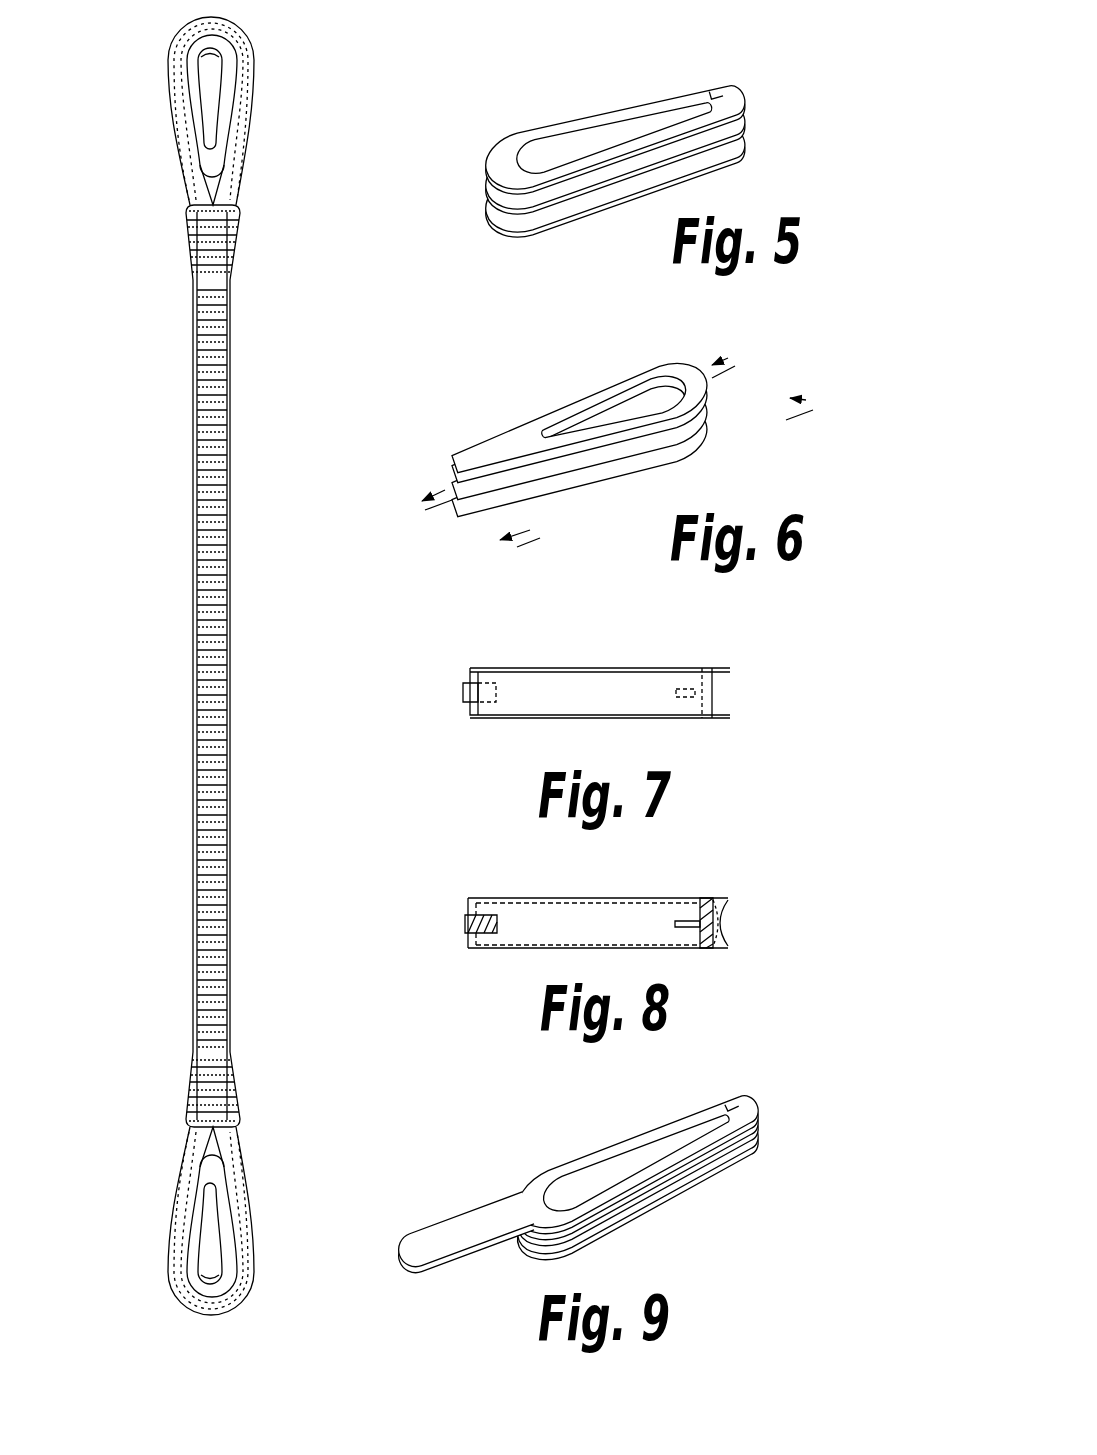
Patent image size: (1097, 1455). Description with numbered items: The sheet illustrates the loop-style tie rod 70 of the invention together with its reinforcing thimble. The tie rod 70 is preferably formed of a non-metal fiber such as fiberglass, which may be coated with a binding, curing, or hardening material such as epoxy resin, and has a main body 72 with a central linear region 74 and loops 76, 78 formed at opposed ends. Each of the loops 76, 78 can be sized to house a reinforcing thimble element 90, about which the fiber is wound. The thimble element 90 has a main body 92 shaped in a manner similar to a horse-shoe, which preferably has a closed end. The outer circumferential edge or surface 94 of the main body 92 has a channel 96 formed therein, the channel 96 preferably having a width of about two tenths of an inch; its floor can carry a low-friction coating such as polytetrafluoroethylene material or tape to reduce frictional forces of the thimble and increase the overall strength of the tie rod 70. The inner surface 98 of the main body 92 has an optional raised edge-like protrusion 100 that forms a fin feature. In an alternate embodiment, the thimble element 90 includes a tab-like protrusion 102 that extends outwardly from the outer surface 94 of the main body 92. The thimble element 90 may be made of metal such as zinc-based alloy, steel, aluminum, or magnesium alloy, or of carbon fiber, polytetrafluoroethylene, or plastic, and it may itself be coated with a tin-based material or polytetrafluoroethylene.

In FIG. 4, the tie rod 70 is at (138, 213).
In FIG. 4, the main body 72 is at (252, 487).
In FIG. 4, the central linear region 74 is at (231, 762).
In FIG. 4, the loop 76 is at (250, 127).
In FIG. 4, the loop 78 is at (177, 1246).
In FIG. 4, the thimble element 90 is at (229, 53).
In FIG. 5, the thimble element 90 is at (614, 143).
In FIG. 6, the thimble element 90 is at (608, 427).
In FIG. 7, the thimble element 90 is at (628, 677).
In FIG. 8, the thimble element 90 is at (566, 892).
In FIG. 9, the thimble element 90 is at (618, 1150).
In FIG. 5, the main body 92 is at (588, 112).
In FIG. 6, the main body 92 is at (613, 363).
In FIG. 7, the main body 92 is at (588, 667).
In FIG. 8, the main body 92 is at (553, 897).
In FIG. 9, the main body 92 is at (581, 1178).
In FIG. 5, the outer circumferential edge or surface 94 is at (702, 166).
In FIG. 5, the channel 96 is at (532, 216).
In FIG. 6, the channel 96 is at (652, 460).
In FIG. 7, the channel 96 is at (660, 696).
In FIG. 9, the channel 96 is at (745, 1167).
In FIG. 8, the inner surface 98 is at (584, 925).
In FIG. 6, the raised edge-like protrusion 100 is at (648, 398).
In FIG. 8, the raised edge-like protrusion 100 is at (688, 920).
In FIG. 9, the tab-like protrusion 102 is at (480, 1228).